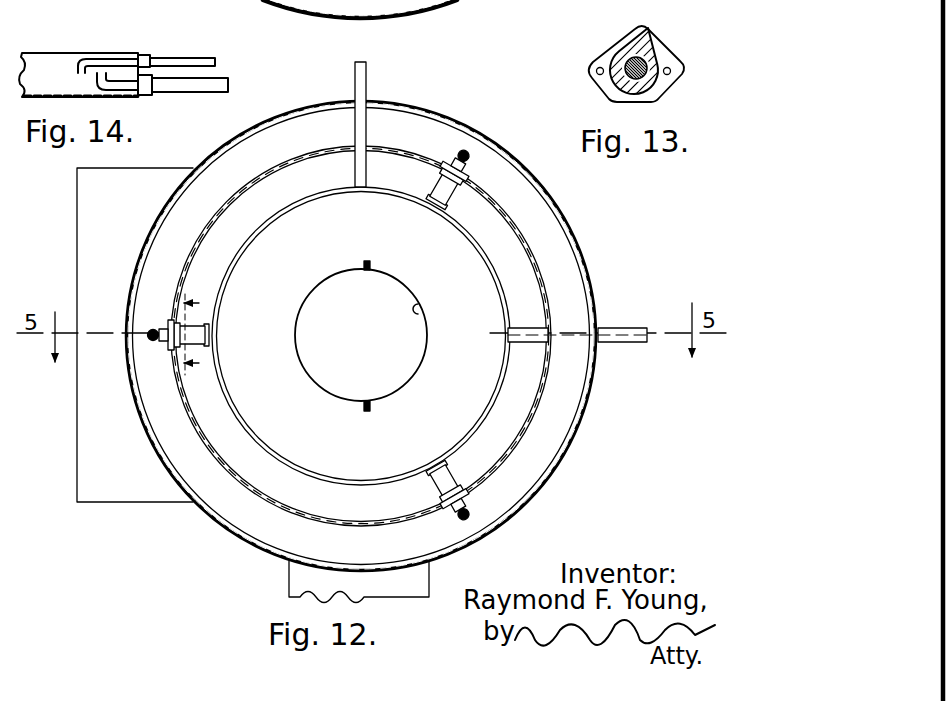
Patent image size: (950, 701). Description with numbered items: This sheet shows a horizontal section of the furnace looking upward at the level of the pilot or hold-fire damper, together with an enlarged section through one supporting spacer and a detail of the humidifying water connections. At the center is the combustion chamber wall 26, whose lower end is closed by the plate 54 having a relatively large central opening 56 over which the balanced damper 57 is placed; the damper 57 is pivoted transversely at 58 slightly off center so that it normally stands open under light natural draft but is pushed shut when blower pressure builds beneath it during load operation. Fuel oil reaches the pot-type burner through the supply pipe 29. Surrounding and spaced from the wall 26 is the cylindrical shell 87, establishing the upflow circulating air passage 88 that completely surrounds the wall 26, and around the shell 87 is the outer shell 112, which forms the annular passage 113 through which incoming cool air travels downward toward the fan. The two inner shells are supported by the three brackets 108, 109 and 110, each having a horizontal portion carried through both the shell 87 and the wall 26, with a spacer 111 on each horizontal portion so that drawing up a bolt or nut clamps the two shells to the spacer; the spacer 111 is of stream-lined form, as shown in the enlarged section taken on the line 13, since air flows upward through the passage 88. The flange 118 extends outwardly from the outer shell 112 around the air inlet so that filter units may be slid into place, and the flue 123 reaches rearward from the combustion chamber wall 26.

In FIG. 12, the section line 13— 13 is at (198, 336).
In FIG. 12, the cylindrical wall 26 is at (489, 255).
In FIG. 12, the supply pipe 29 is at (626, 329).
In FIG. 12, the closing plate 54 is at (434, 265).
In FIG. 12, the central opening 56 is at (422, 310).
In FIG. 12, the balanced damper 57 is at (361, 335).
In FIG. 12, the pivot 58 is at (369, 262).
In FIG. 12, the cylindrical shell 87 is at (539, 270).
In FIG. 12, the upflow circulating air passage 88 is at (486, 224).
In FIG. 12, the bracket 108 is at (149, 340).
In FIG. 12, the bracket 109 is at (459, 522).
In FIG. 12, the bracket 110 is at (471, 160).
In FIG. 12, the spacer 111 is at (204, 326).
In FIG. 13, the spacer 111 is at (627, 47).
In FIG. 12, the outer shell 112 is at (589, 390).
In FIG. 12, the annular passage 113 is at (543, 448).
In FIG. 12, the flange 118 is at (135, 335).
In FIG. 12, the flue 123 is at (289, 585).